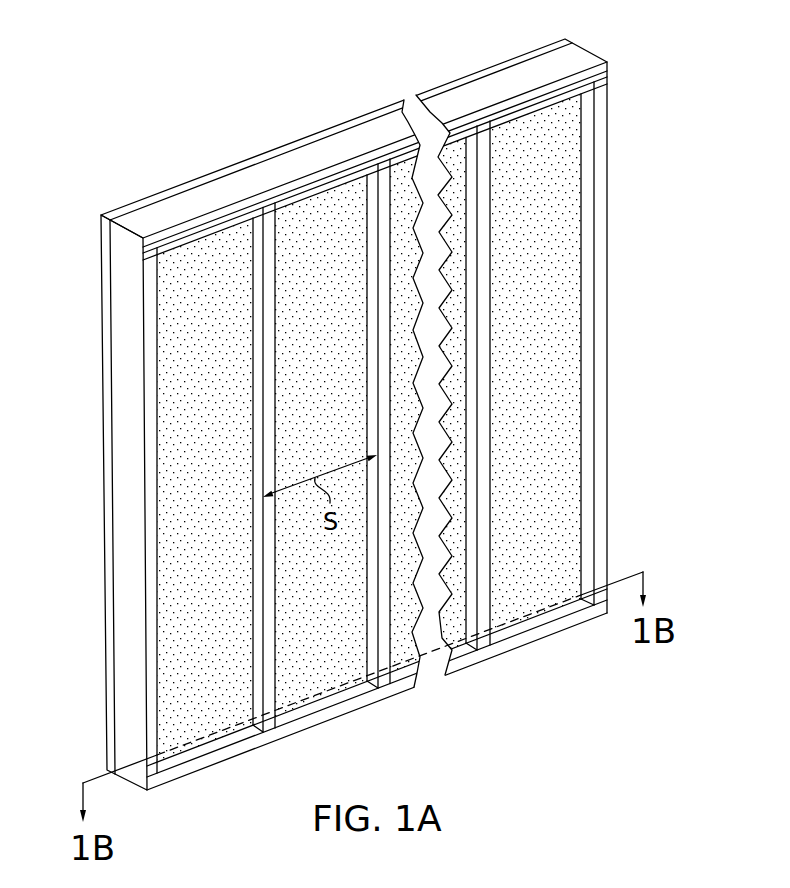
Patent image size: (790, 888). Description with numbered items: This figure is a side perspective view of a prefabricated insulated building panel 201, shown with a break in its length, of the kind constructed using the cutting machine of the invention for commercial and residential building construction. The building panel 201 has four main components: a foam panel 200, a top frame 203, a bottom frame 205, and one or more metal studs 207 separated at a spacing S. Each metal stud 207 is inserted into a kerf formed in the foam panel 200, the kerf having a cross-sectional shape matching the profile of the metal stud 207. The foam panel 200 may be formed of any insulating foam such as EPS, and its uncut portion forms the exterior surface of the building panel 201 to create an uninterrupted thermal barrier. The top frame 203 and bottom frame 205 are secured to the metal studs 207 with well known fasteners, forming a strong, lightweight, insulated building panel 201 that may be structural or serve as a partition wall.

The foam panel 200 is at (562, 320).
The insulated building panel 201 is at (423, 397).
The top frame 203 is at (545, 67).
The bottom frame 205 is at (525, 638).
The metal stud 207 is at (483, 363).